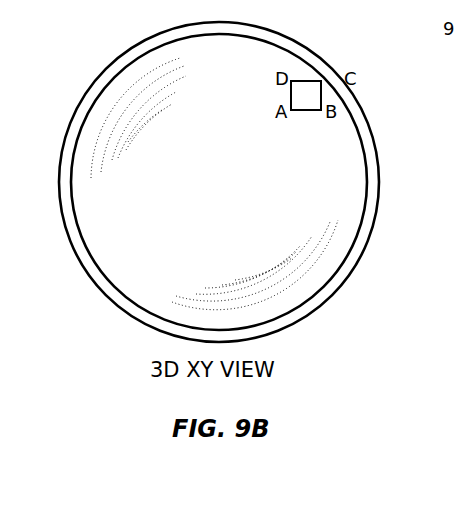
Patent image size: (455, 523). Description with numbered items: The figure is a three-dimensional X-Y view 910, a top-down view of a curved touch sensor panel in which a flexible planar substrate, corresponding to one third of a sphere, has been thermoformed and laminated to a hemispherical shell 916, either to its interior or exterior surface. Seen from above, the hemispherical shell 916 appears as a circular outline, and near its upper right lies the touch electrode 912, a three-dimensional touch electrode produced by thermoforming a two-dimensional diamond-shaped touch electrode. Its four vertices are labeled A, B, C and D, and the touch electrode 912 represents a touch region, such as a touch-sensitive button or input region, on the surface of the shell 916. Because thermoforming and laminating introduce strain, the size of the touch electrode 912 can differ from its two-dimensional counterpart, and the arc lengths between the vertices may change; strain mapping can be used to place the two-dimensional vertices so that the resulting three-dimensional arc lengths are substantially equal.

The three-dimensional X-Y view 910 is at (113, 14).
The touch electrode 912 is at (309, 101).
The hemispherical shell 916 is at (370, 189).